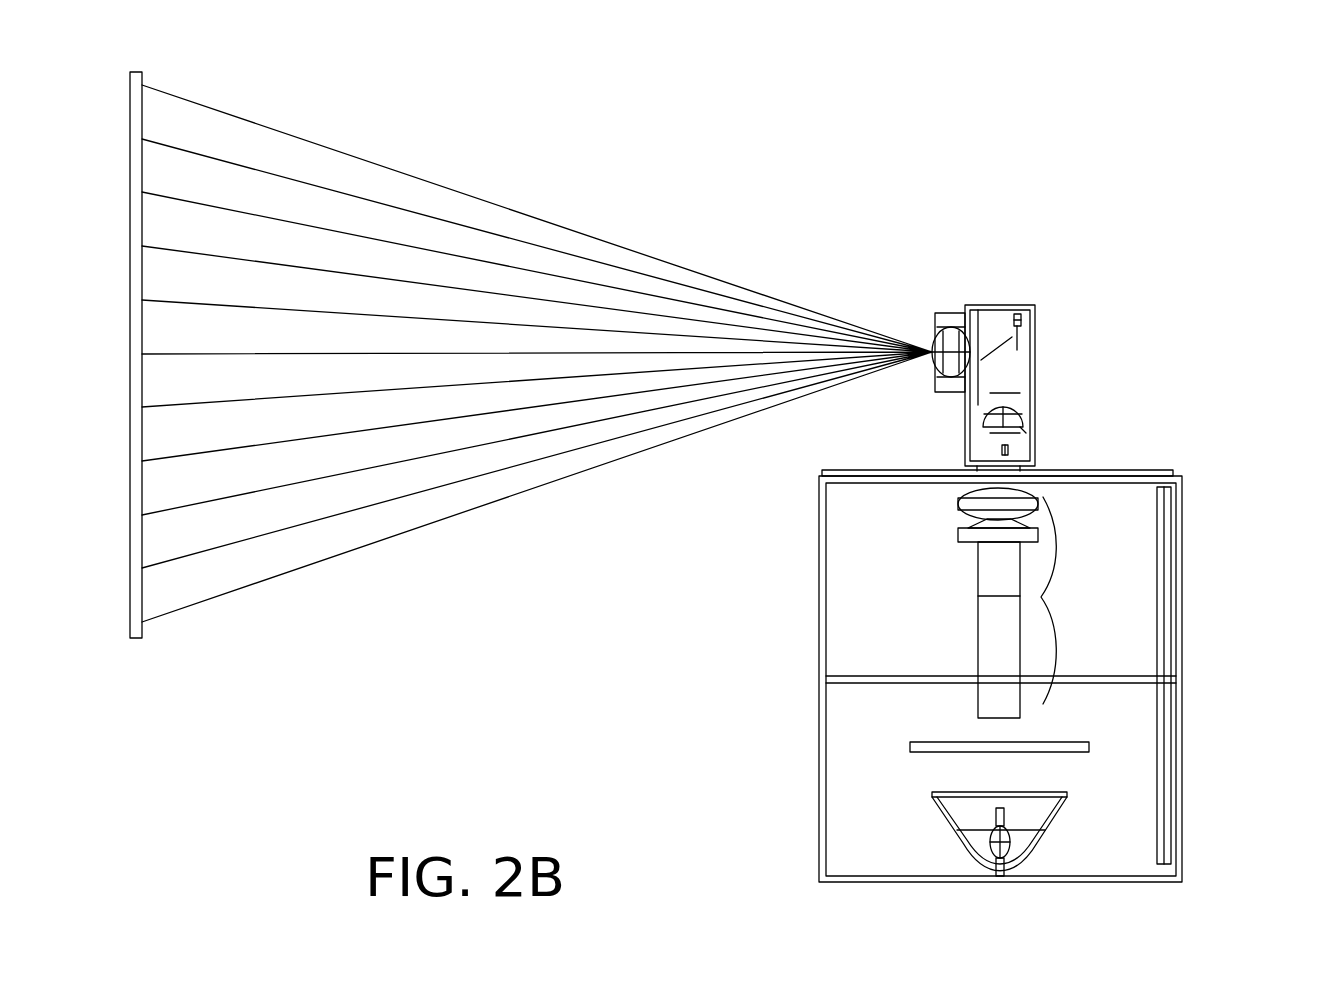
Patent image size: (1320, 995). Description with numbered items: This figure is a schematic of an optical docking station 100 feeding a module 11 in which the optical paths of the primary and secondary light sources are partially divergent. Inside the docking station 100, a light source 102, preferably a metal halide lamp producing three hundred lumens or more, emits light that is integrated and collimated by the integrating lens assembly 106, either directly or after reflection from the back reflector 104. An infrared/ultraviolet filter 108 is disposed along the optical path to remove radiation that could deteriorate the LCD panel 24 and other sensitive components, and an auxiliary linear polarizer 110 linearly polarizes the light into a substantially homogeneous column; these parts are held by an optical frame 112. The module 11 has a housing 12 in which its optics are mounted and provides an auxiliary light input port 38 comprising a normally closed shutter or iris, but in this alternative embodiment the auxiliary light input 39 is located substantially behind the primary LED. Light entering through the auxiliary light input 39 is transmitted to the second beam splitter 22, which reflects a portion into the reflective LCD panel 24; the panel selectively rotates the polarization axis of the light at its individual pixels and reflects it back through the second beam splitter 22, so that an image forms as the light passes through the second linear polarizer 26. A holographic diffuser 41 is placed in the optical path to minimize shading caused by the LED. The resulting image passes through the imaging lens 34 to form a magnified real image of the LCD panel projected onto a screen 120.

The housing 12 is at (152, 114).
The screen 120 is at (145, 630).
The optical docking station 100 is at (812, 219).
The module 11 is at (1116, 289).
The imaging lens 34 is at (938, 393).
The second linear polarizer 26 is at (970, 307).
The auxiliary light input port 38 is at (980, 307).
The second beam splitter 22 is at (1025, 382).
The reflective LCD panel 24 is at (1013, 318).
The holographic diffuser 41 is at (1021, 426).
The auxiliary light input 39 is at (1012, 460).
The optical frame 112 is at (1183, 877).
The auxiliary linear polarizer 110 is at (963, 488).
The integrating lens assembly 106 is at (1050, 597).
The infrared/ultraviolet filter 108 is at (1089, 750).
The back reflector 104 is at (957, 830).
The light source 102 is at (1010, 845).